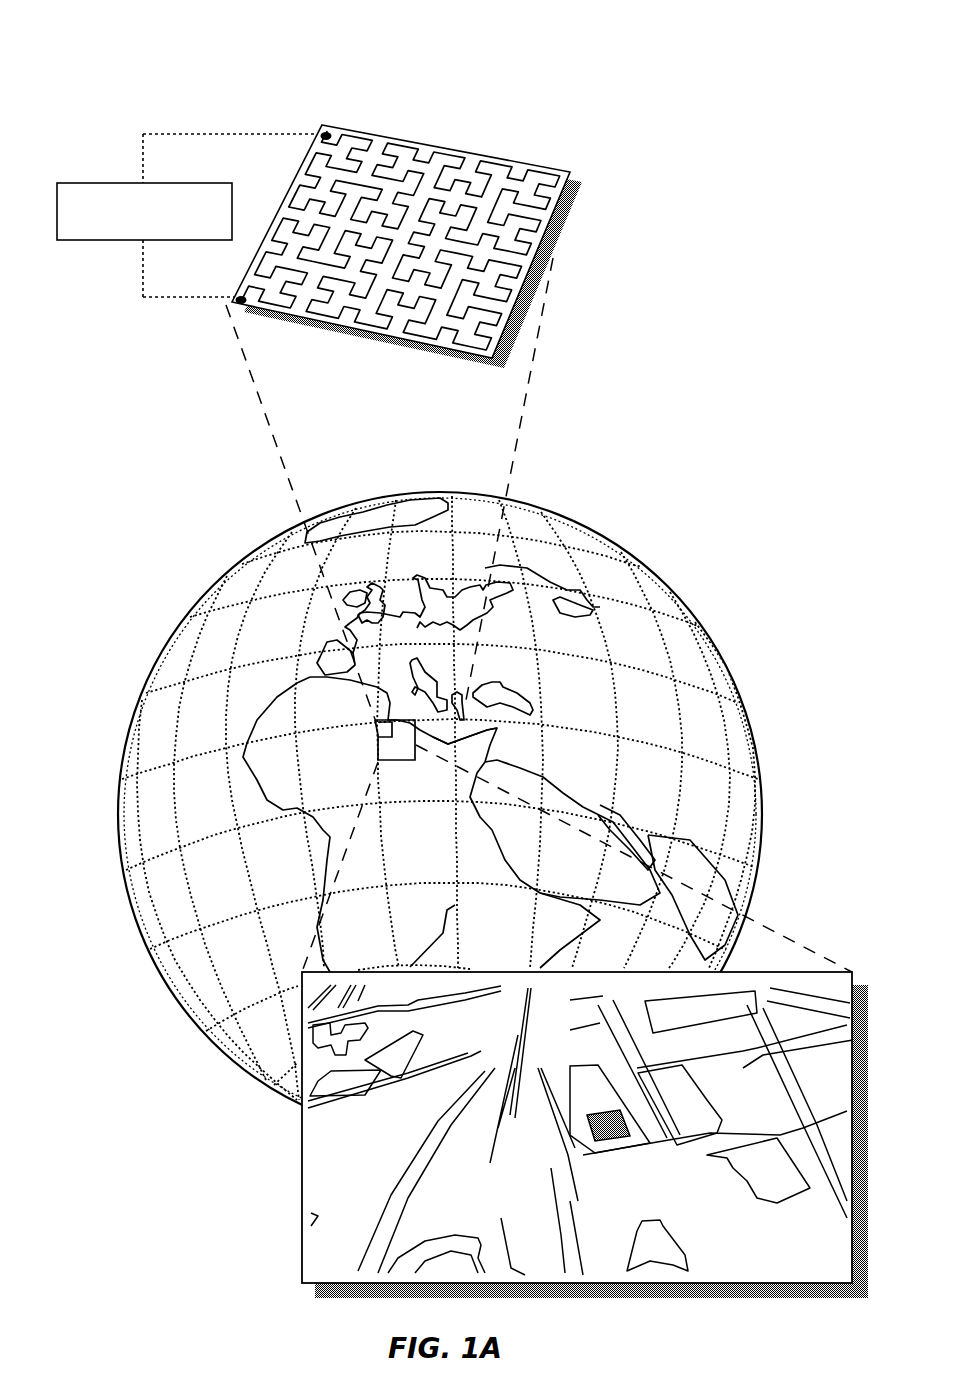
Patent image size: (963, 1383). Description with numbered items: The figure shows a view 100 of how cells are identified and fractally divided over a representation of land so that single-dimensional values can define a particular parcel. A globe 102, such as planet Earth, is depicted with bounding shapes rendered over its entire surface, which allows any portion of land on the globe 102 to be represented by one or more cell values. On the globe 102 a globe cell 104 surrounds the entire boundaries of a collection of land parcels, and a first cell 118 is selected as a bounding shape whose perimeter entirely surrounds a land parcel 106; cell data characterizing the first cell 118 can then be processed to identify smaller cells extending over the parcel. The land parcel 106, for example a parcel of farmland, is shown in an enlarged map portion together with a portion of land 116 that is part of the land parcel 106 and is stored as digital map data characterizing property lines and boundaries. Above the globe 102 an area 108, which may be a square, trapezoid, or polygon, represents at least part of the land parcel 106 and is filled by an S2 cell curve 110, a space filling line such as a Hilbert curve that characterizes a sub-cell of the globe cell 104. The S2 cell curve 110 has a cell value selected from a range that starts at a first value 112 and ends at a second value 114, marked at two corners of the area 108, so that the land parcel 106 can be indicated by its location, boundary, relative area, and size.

The view 100 is at (110, 70).
The globe 102 is at (533, 507).
The globe cell 104 is at (490, 730).
The land parcel 106 is at (607, 1077).
The area 108 is at (550, 263).
The S2 cell curve 110 is at (189, 215).
The first value 112 is at (324, 131).
The second value 114 is at (240, 305).
The portion of land 116 is at (632, 1128).
The first cell 118 is at (400, 765).